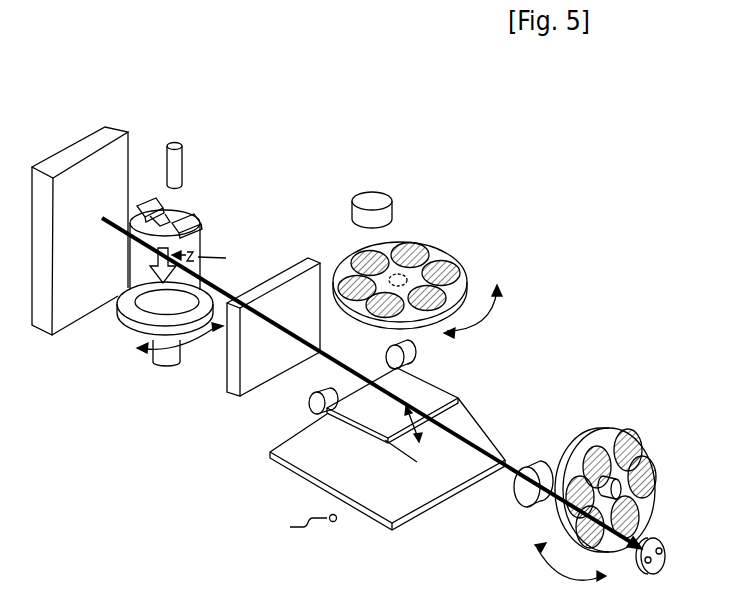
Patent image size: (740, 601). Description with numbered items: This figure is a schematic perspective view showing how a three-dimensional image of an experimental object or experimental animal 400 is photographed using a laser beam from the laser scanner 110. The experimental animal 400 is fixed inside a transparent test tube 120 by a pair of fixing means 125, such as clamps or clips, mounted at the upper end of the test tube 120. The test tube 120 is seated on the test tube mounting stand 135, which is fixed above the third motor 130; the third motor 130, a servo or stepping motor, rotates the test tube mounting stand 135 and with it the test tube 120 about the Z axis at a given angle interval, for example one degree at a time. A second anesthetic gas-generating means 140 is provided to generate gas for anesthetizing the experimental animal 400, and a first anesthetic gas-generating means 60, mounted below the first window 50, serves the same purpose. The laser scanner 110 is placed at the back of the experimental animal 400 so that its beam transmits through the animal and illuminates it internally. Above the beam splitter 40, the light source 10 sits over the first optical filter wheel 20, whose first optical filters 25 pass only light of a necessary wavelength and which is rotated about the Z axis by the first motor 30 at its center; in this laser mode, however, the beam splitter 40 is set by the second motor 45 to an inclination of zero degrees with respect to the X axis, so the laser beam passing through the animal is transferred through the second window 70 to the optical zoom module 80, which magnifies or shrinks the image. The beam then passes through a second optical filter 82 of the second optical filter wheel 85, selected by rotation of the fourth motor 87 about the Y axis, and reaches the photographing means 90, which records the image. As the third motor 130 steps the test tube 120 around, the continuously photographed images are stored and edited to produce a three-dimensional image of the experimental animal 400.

The light source 10 is at (387, 207).
The first optical filter wheel 20 is at (428, 258).
The first optical filters 25 is at (410, 245).
The first motor 30 is at (405, 278).
The beam splitter 40 is at (427, 393).
The second motor 45 is at (309, 403).
The first window 50 is at (317, 458).
The first anesthetic gas-generating means 60 is at (293, 529).
The second window 70 is at (237, 342).
The optical zoom module 80 is at (523, 466).
The second optical filters 82 is at (653, 448).
The second optical filter wheel 85 is at (618, 428).
The fourth motor 87 is at (600, 448).
The photographing means 90 is at (653, 537).
The laser scanner 110 is at (102, 132).
The test tube 120 is at (187, 210).
The fixing means 125 is at (145, 199).
The third motor 130 is at (151, 362).
The test tube mounting stand 135 is at (120, 326).
The second anesthetic gas-generating means 140 is at (177, 143).
The experimental animal 400 is at (206, 264).